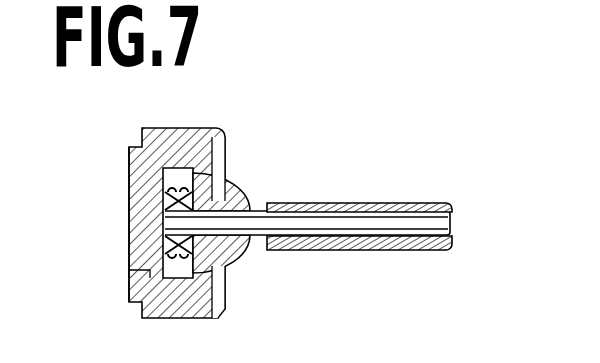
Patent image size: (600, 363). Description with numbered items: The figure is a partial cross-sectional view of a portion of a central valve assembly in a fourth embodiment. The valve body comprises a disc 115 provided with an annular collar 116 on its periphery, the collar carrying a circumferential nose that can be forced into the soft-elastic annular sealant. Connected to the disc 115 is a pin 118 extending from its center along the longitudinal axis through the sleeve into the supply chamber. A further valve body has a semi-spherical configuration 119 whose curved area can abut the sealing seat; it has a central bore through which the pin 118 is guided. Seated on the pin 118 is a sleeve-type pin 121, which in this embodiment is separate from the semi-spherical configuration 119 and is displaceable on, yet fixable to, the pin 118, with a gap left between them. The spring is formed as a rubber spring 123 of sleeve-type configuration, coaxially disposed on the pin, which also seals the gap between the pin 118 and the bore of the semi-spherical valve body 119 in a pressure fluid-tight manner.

The disc 115 is at (138, 205).
The annular collar 116 is at (178, 148).
The pin 118 is at (442, 230).
The semi-spherical configuration 119 is at (232, 255).
The sleeve-type pin 121 is at (366, 203).
The rubber spring 123 is at (131, 274).